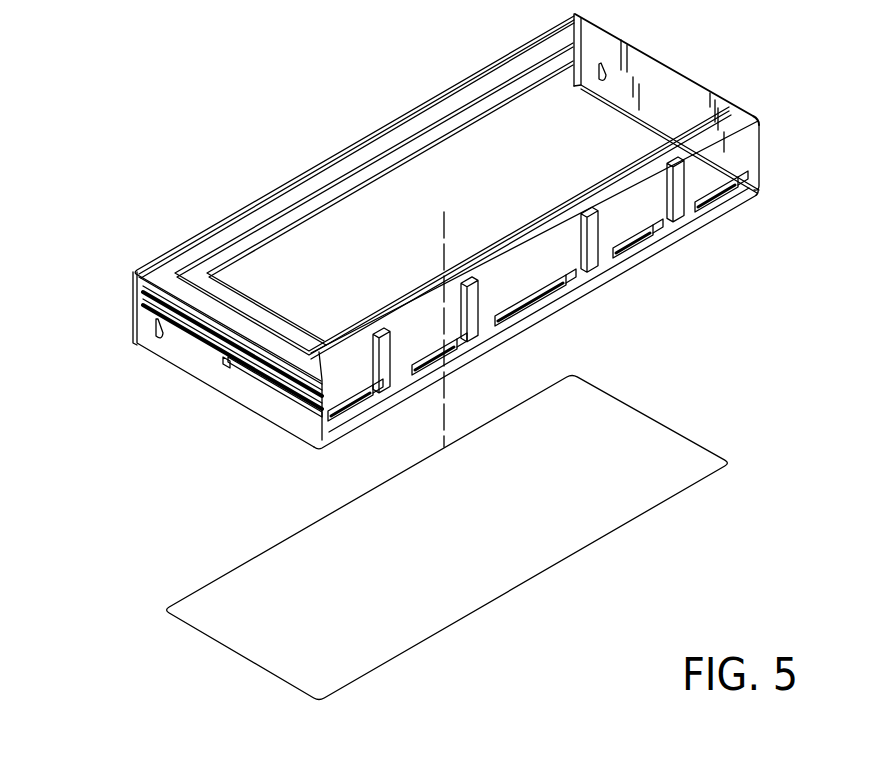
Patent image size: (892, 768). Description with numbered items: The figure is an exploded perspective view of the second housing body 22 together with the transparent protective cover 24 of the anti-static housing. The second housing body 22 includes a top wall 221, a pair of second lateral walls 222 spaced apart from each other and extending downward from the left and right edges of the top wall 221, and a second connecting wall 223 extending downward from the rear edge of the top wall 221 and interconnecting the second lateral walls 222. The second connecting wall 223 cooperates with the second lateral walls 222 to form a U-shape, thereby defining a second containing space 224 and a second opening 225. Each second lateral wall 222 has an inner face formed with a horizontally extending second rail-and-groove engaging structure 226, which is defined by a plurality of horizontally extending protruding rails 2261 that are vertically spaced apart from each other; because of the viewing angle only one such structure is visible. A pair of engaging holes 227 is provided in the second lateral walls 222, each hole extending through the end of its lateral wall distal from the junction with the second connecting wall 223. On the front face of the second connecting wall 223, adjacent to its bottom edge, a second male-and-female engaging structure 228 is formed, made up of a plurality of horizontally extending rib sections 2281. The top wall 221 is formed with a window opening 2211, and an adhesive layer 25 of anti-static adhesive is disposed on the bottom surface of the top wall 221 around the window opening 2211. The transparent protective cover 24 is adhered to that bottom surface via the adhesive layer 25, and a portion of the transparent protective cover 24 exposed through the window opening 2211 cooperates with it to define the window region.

The second housing body 22 is at (312, 130).
The top wall 221 is at (423, 103).
The second opening 225 is at (488, 124).
The adhesive layer 25 is at (213, 250).
The window opening 2211 is at (325, 231).
The second rail-and-groove engaging structure 226 is at (158, 276).
The protruding rails 2261 is at (146, 289).
The second lateral walls 222 is at (688, 108).
The engaging holes 227 is at (606, 75).
The second connecting wall 223 is at (697, 226).
The second containing space 224 is at (517, 286).
The second male-and-female engaging structure 228 is at (645, 246).
The rib sections 2281 is at (340, 412).
The transparent protective cover 24 is at (470, 560).